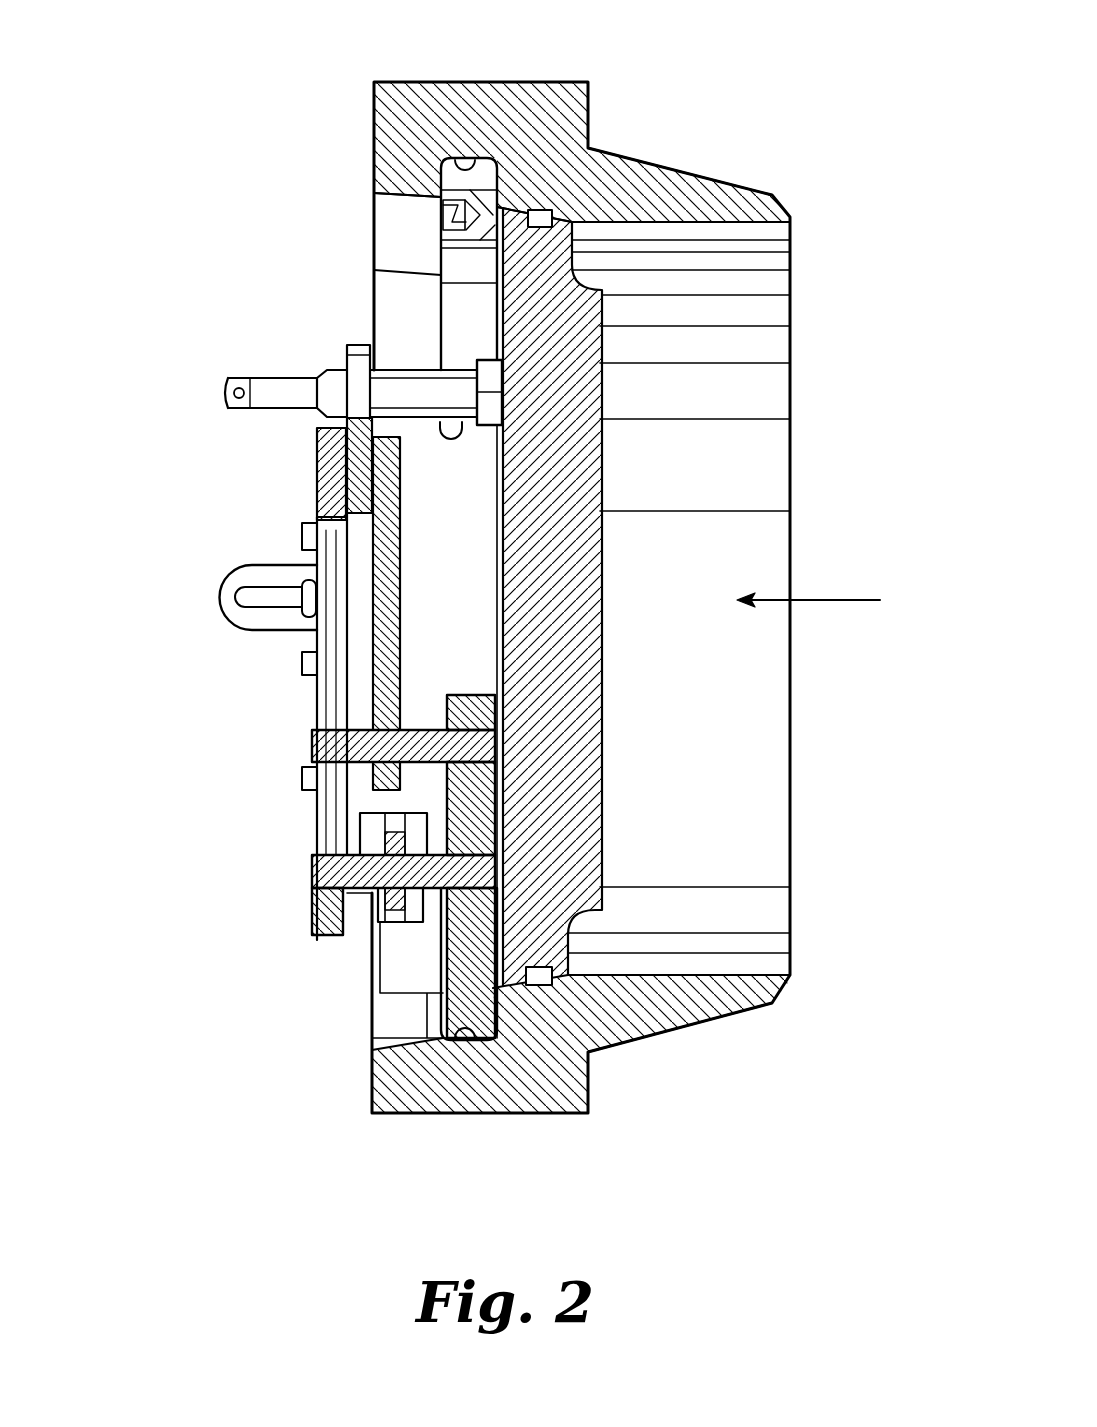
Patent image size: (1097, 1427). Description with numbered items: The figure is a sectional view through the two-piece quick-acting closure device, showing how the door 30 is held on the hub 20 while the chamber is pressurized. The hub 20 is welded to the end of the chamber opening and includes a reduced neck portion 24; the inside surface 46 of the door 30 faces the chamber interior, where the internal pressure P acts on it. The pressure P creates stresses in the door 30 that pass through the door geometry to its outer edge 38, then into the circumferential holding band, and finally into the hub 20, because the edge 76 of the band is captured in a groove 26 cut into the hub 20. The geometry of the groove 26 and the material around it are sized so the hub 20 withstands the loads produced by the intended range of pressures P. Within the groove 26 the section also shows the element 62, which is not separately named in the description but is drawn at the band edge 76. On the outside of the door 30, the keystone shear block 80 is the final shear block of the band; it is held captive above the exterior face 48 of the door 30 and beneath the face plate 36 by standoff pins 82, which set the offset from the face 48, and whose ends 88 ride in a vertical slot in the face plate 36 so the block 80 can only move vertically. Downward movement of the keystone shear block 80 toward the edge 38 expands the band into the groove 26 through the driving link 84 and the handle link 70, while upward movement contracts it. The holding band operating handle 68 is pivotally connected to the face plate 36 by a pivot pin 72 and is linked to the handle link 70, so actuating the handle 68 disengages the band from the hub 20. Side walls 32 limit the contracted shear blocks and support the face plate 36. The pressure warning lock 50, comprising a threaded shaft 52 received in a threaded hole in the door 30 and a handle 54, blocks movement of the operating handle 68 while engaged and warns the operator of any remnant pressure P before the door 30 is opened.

The hub 20 is at (398, 112).
The reduced neck portion 24 is at (680, 168).
The groove 26 is at (487, 158).
The door 30 is at (465, 553).
The side walls 32 is at (395, 215).
The face plate 36 is at (317, 703).
The outer edge 38 is at (538, 1115).
The inside surface 46 is at (600, 385).
The exterior face 48 is at (500, 495).
The pressure warning lock 50 is at (307, 324).
The threaded shaft 52 is at (272, 375).
The handle 54 is at (232, 388).
The bearing 62 is at (445, 215).
The holding band operating handle 68 is at (355, 492).
The handle link 70 is at (375, 625).
The pivot pin 72 is at (312, 918).
The edge 76 is at (438, 163).
The keystone shear block 80 is at (447, 960).
The standoff pins 82 is at (410, 735).
The driving link 84 is at (400, 815).
The ends 88 is at (312, 748).
The pressure P is at (833, 601).